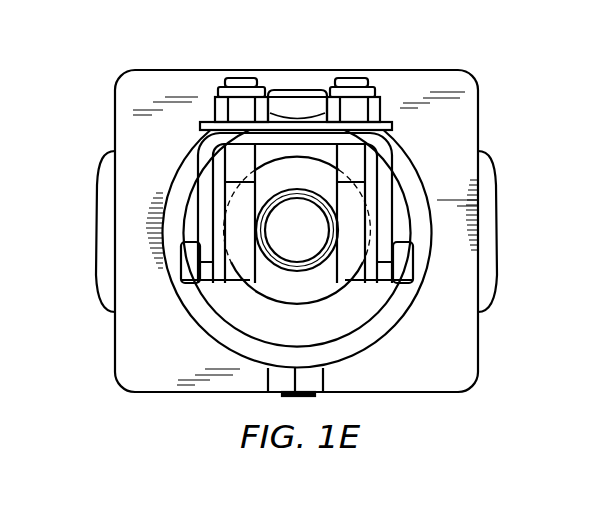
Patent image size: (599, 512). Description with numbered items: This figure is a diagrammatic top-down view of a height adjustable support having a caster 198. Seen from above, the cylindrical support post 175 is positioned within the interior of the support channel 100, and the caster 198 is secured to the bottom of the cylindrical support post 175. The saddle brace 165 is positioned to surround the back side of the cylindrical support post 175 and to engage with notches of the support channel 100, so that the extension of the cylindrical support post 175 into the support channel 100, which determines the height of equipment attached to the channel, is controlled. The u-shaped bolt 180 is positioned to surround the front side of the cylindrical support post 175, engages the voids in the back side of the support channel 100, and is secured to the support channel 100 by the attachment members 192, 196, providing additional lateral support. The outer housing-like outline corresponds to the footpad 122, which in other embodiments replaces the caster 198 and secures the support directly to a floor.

The support channel 100 is at (395, 192).
The footpad 122 is at (163, 69).
The saddle brace 165 is at (245, 262).
The cylindrical support post 175 is at (315, 267).
The u-shaped bolt 180 is at (294, 300).
The attachment member 192 is at (237, 79).
The attachment member 196 is at (358, 79).
The caster 198 is at (162, 222).